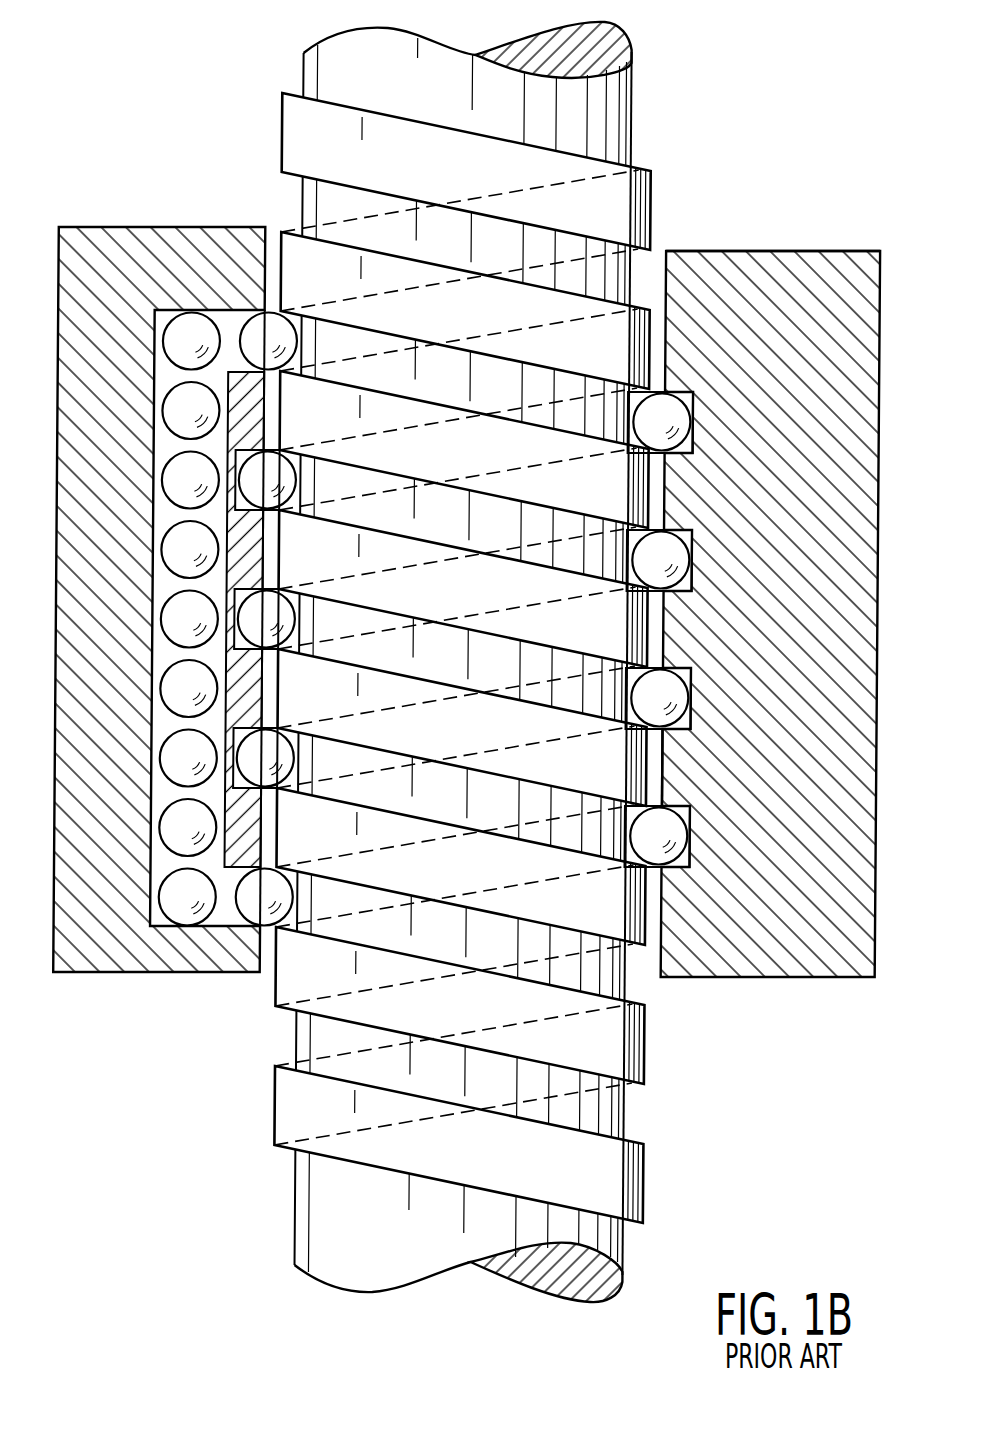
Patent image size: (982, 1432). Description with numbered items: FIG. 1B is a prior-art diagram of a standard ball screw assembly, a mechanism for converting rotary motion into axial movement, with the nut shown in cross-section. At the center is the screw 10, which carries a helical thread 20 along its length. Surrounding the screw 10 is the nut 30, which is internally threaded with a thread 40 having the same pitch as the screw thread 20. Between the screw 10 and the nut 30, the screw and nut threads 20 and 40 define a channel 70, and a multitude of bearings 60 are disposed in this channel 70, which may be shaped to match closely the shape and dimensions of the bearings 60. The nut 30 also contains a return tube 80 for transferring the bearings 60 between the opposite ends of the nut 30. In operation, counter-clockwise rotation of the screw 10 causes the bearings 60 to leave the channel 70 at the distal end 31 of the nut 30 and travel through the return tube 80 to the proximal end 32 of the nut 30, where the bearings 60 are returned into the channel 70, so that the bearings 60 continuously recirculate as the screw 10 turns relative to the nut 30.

The screw 10 is at (304, 1205).
The thread 20 is at (656, 1175).
The nut 30 is at (148, 972).
The distal end 31 is at (743, 978).
The proximal end 32 is at (731, 251).
The thread 40 is at (668, 765).
The bearings 60 is at (270, 327).
The channel 70 is at (695, 447).
The return tube 80 is at (231, 322).